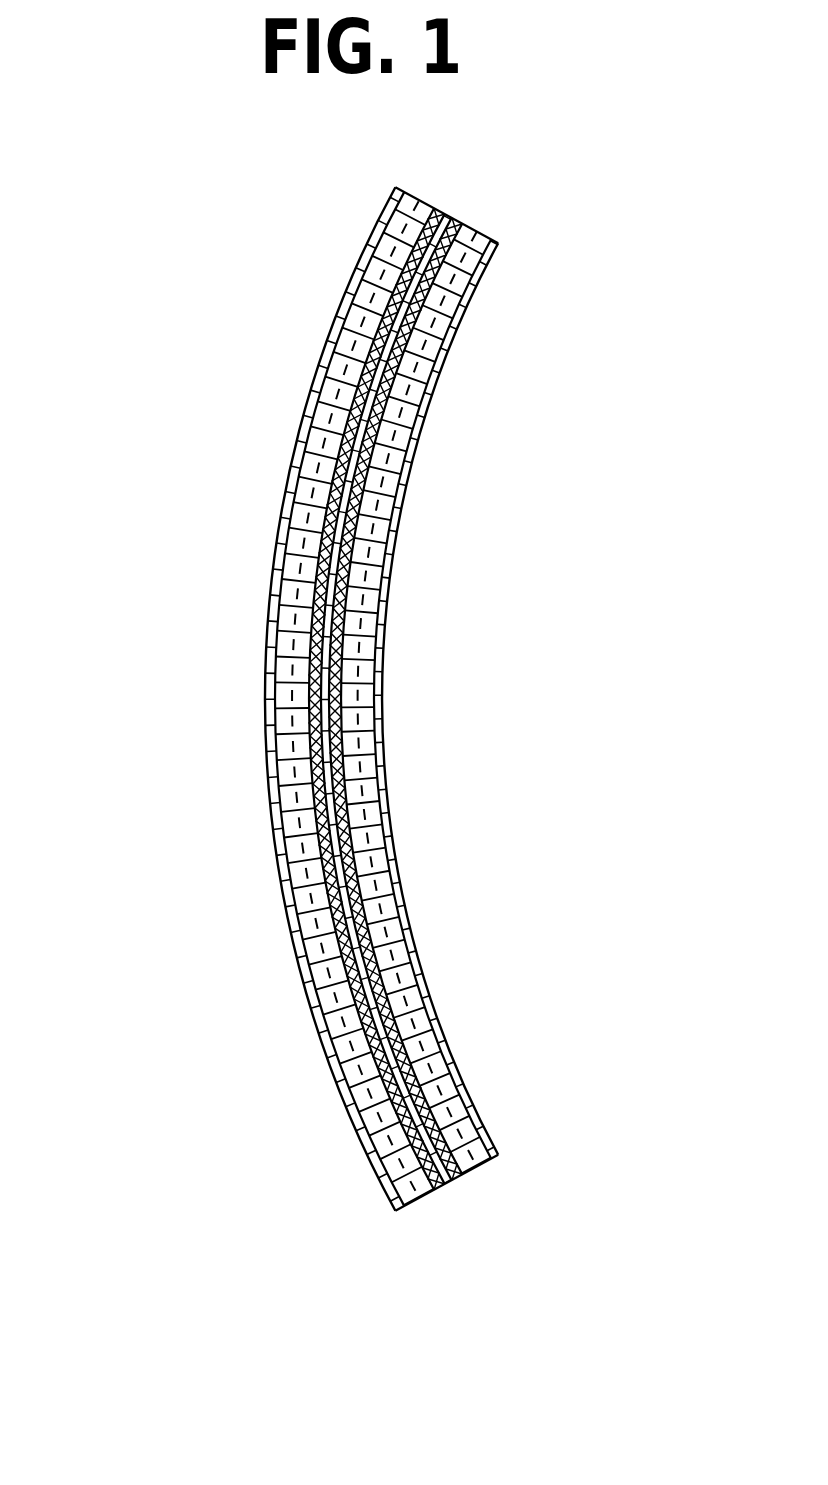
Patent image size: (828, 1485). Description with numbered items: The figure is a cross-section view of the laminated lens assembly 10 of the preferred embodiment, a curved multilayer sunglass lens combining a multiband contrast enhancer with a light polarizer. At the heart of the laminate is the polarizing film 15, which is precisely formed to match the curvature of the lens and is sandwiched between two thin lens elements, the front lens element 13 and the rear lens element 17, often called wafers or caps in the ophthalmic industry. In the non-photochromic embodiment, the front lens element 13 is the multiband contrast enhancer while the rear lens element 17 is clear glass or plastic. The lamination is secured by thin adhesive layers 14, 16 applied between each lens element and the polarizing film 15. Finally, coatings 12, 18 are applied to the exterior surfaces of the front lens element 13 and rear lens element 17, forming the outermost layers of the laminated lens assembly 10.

The laminated lens assembly 10 is at (218, 356).
The coating 12 is at (315, 1038).
The front lens element 13 is at (421, 1197).
The adhesive layer 14 is at (439, 1187).
The polarizing film 15 is at (448, 1182).
The adhesive layer 16 is at (457, 1177).
The rear lens element 17 is at (458, 1133).
The coating 18 is at (418, 950).